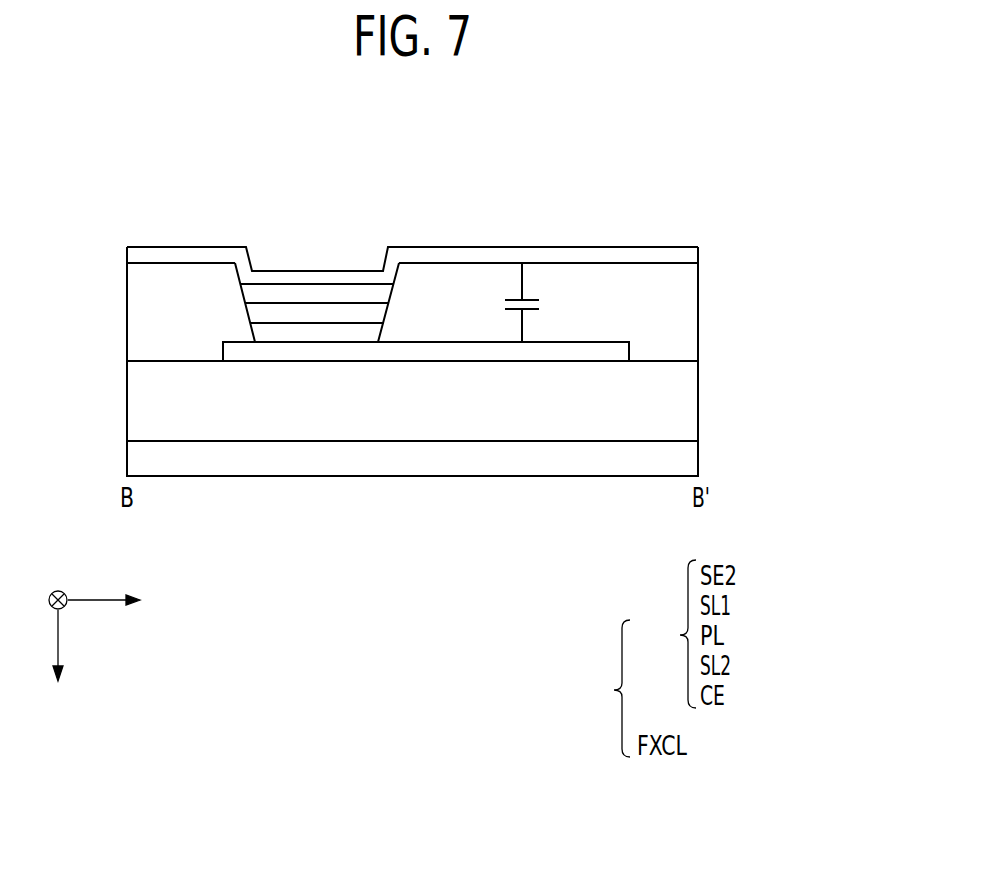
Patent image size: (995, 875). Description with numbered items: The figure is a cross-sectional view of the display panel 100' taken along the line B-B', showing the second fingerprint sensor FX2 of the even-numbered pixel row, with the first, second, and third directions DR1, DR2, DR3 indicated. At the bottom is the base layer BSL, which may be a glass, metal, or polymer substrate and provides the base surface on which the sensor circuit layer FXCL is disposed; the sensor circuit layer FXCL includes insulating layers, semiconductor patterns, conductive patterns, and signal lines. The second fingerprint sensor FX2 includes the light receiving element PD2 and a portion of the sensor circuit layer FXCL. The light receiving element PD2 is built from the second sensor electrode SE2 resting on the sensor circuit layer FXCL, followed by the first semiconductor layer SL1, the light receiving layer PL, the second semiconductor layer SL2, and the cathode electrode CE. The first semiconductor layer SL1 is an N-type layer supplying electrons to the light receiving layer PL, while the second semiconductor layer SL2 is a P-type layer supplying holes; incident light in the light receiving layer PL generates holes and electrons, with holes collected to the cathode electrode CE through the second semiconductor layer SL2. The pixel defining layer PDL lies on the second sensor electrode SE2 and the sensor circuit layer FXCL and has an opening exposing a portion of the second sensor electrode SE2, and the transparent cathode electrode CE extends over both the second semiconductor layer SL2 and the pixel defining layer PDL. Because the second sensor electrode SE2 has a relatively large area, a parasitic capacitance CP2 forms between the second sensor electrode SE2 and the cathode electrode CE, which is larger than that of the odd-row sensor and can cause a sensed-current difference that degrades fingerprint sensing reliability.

The display panel 100' is at (415, 302).
The cathode electrode CE is at (697, 256).
The pixel defining layer PDL is at (697, 303).
The sensor circuit layer FXCL is at (697, 398).
The base layer BSL is at (697, 457).
The second sensor electrode SE2 is at (572, 353).
The first semiconductor layer SL1 is at (262, 340).
The light receiving layer PL is at (262, 330).
The second semiconductor layer SL2 is at (255, 292).
The parasitic capacitance CP2 is at (543, 302).
The first direction DR1 is at (124, 599).
The second direction DR2 is at (59, 583).
The third direction DR3 is at (59, 661).
The second fingerprint sensor FX2 is at (601, 688).
The light receiving element PD2 is at (666, 634).